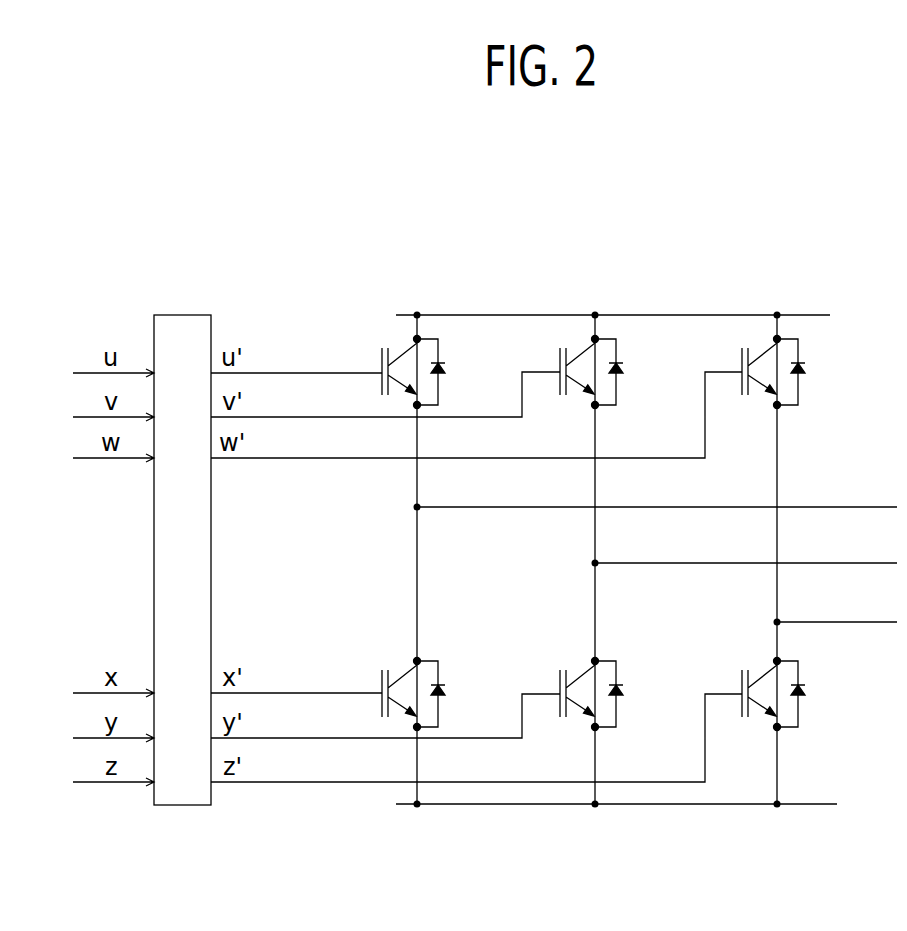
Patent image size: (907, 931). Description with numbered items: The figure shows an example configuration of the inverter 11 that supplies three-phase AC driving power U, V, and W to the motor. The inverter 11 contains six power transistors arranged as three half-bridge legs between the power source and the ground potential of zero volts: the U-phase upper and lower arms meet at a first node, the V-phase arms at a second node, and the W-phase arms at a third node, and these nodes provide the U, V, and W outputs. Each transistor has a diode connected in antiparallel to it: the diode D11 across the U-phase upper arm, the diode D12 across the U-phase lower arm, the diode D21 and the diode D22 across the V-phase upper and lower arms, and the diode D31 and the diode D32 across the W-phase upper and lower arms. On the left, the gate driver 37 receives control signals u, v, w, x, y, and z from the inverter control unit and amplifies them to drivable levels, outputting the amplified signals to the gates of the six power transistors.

The inverter 11 is at (554, 492).
The gate driver 37 is at (185, 315).
The diode D11 is at (449, 369).
The diode D21 is at (627, 369).
The diode D31 is at (812, 372).
The diode D12 is at (449, 692).
The diode D22 is at (627, 692).
The diode D32 is at (812, 694).